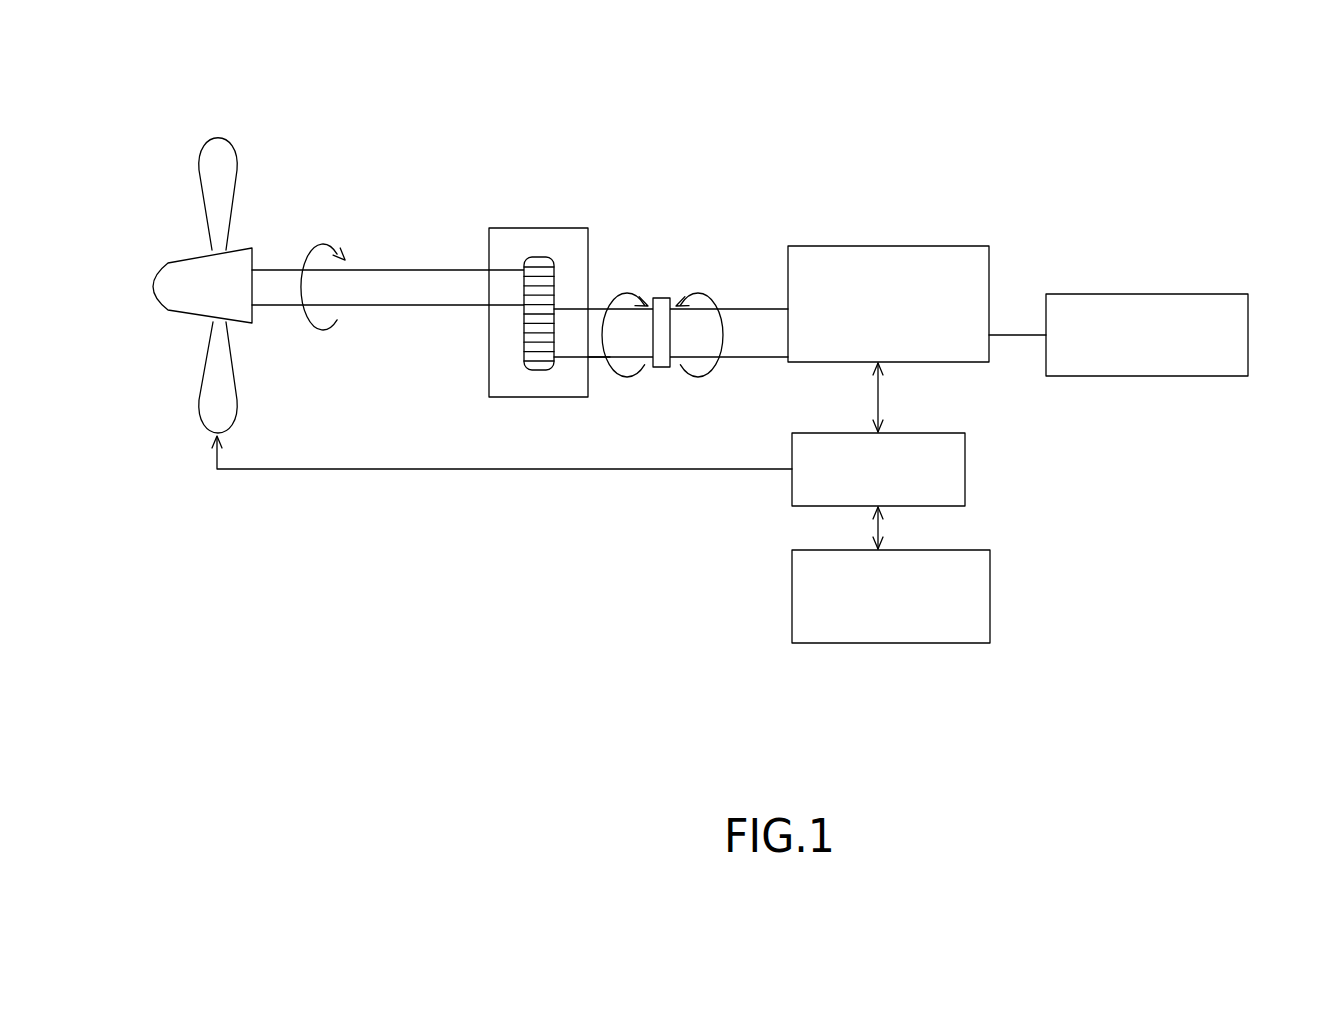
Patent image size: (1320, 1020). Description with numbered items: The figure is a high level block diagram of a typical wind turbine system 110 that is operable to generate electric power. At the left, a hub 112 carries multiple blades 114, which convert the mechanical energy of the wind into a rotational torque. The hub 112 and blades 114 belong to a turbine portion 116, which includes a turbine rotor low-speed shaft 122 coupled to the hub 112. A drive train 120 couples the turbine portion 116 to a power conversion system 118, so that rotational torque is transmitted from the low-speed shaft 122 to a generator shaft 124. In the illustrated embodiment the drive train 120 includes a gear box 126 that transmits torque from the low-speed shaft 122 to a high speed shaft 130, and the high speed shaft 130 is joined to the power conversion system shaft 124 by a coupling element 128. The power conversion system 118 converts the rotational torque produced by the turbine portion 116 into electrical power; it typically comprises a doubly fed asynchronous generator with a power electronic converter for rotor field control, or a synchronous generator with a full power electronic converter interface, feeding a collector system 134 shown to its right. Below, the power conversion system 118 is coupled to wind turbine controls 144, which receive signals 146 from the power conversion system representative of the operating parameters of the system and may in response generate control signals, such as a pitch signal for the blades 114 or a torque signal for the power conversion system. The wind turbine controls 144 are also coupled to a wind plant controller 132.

The wind turbine system 110 is at (1170, 100).
The hub 112 is at (189, 272).
The blades 114 is at (218, 178).
The turbine portion 116 is at (370, 200).
The power conversion system 118 is at (845, 262).
The drive train 120 is at (540, 178).
The turbine rotor low-speed shaft 122 is at (408, 295).
The generator shaft 124 is at (750, 316).
The gear box 126 is at (592, 247).
The coupling element 128 is at (661, 298).
The high speed shaft 130 is at (596, 352).
The wind plant controller 132 is at (792, 598).
The collector system 134 is at (1152, 294).
The wind turbine controls 144 is at (815, 433).
The signals 146 is at (879, 397).